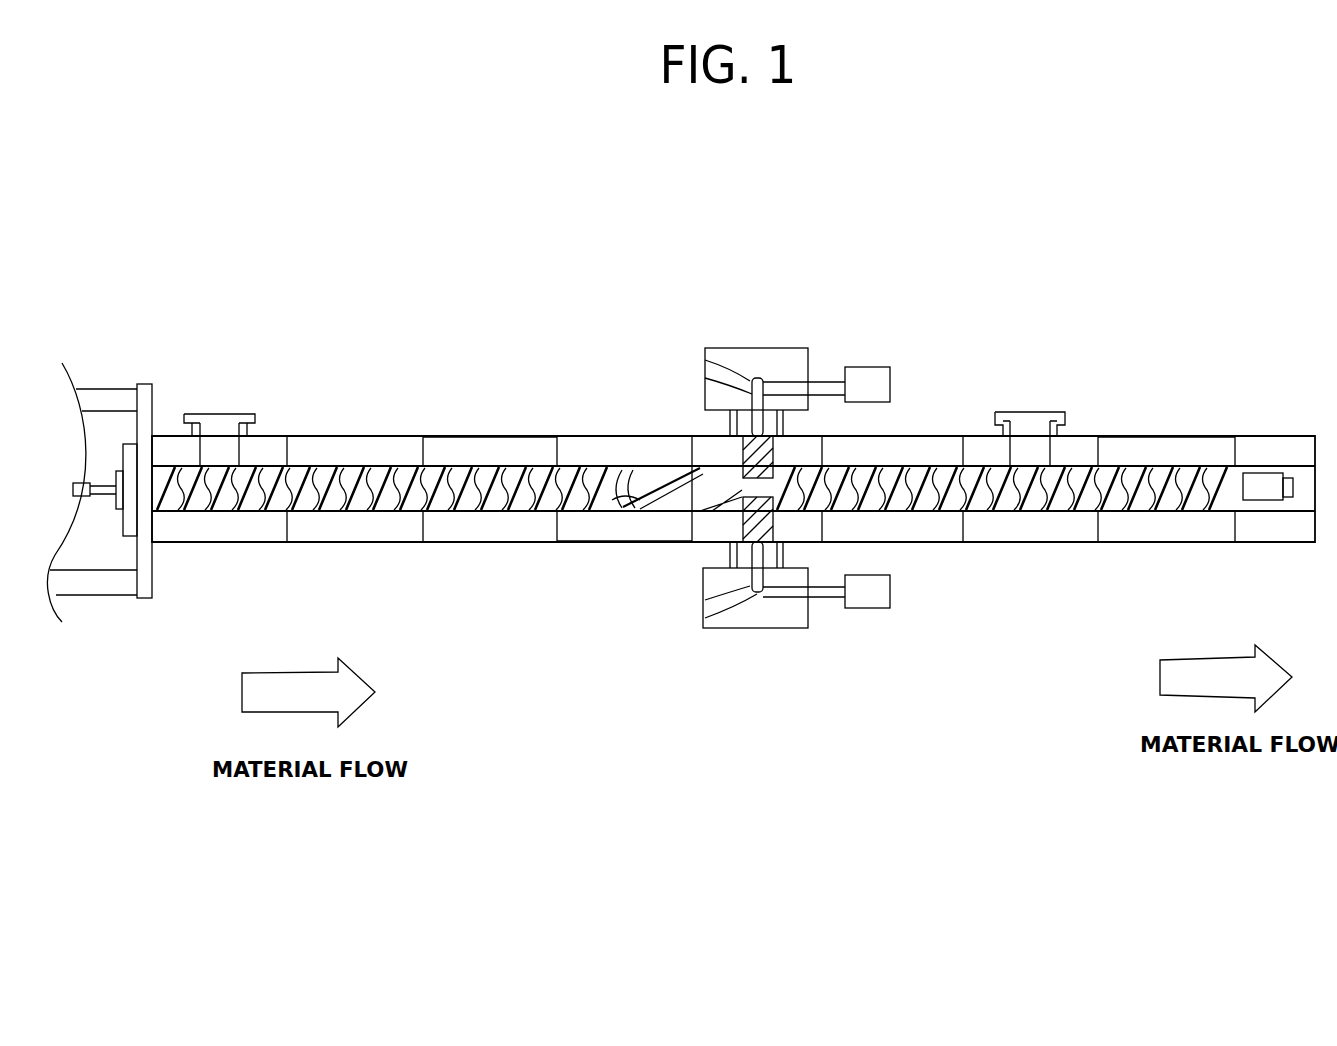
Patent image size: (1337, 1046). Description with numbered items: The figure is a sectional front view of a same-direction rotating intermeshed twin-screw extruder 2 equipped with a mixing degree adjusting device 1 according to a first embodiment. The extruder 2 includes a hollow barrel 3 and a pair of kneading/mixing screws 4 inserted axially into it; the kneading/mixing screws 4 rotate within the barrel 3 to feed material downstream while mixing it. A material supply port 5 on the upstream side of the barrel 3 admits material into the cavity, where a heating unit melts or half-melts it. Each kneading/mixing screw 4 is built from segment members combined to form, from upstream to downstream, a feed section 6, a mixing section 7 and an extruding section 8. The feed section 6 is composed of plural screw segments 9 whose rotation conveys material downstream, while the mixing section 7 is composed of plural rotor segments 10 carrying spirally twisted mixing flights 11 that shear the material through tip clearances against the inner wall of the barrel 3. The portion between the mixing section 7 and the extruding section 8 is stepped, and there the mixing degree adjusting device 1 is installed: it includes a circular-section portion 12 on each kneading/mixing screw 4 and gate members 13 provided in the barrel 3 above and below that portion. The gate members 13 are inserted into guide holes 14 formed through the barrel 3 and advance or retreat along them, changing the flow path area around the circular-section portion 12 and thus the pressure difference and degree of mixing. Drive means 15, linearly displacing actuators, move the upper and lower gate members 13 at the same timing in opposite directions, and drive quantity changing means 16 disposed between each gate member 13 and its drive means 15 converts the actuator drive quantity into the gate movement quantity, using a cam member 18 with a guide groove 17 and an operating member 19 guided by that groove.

The mixing degree adjusting device 1 is at (843, 297).
The extruder 2 is at (1246, 333).
The barrel 3 is at (1183, 450).
The kneading/mixing screw 4 is at (1262, 482).
The material supply port 5 is at (222, 415).
The feed section 6 is at (460, 450).
The mixing section 7 is at (628, 543).
The extruding section 8 is at (1071, 452).
The screw segment 9 is at (362, 462).
The rotor segment 10 is at (627, 463).
The mixing flight 11 is at (600, 512).
The circular-section portion 12 is at (737, 520).
The gate member 13 is at (770, 447).
The guide hole 14 is at (765, 540).
The drive means 15 is at (870, 367).
The drive quantity changing means 16 is at (744, 342).
The guide groove 17 is at (706, 365).
The cam member 18 is at (788, 358).
The operating member 19 is at (703, 392).